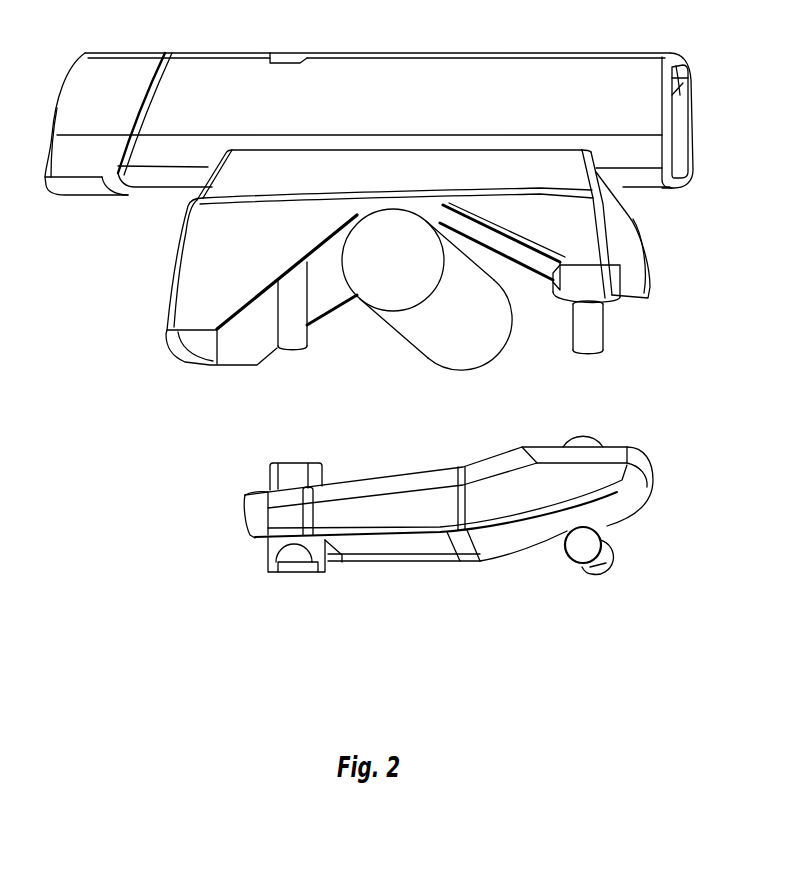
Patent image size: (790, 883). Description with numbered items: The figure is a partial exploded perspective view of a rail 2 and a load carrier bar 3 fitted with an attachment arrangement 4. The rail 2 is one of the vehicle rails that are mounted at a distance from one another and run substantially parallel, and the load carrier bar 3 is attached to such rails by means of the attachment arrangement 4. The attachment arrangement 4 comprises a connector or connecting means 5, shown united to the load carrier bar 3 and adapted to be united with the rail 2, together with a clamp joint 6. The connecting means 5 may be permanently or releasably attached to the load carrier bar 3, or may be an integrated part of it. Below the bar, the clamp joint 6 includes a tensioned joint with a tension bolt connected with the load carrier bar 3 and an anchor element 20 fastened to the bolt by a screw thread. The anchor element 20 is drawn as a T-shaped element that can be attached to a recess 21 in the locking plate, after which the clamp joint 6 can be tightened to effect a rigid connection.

The rail 2 is at (487, 330).
The load carrier bar 3 is at (393, 78).
The attachment arrangement 4 is at (146, 431).
The connecting means 5 is at (188, 292).
The clamp joint 6 is at (574, 645).
The anchor element 20 is at (286, 553).
The recess 21 is at (336, 558).